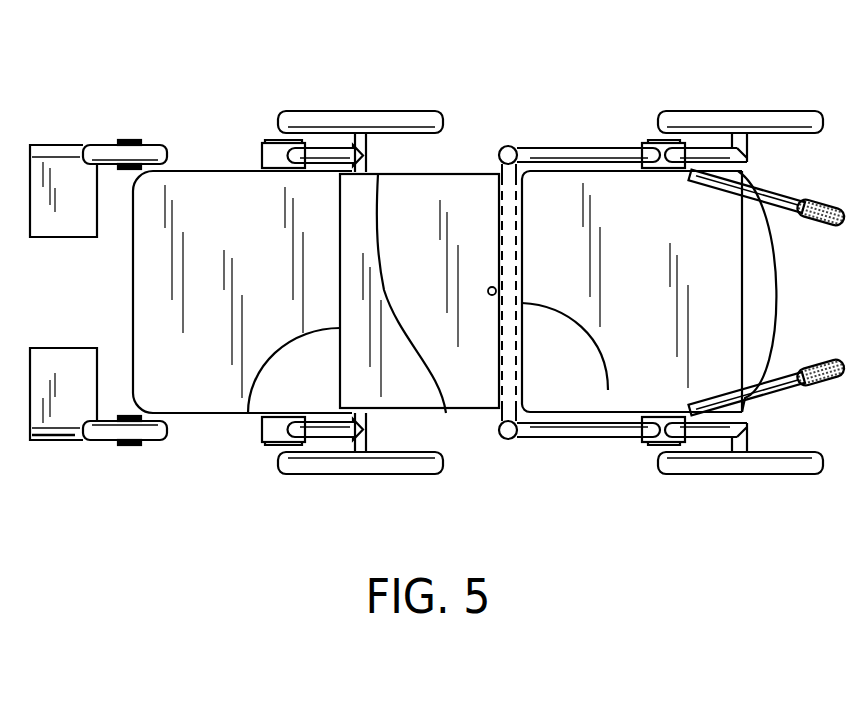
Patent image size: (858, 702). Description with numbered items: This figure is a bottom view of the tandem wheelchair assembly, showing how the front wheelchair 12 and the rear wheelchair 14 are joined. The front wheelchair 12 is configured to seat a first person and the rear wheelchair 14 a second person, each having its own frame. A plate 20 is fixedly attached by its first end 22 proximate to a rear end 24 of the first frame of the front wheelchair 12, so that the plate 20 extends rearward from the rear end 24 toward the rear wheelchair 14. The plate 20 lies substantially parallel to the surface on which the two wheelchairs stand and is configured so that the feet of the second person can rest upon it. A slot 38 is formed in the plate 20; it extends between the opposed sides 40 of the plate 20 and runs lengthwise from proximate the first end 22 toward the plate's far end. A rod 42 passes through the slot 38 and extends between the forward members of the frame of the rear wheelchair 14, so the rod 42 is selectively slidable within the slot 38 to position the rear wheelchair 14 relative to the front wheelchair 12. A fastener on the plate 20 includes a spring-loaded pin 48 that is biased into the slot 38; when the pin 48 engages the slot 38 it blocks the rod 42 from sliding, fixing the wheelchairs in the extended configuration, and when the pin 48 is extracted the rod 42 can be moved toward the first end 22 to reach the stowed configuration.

The front wheelchair 12 is at (228, 200).
The rear wheelchair 14 is at (620, 232).
The plate 20 is at (415, 205).
The first end 22 is at (248, 413).
The rear end 24 is at (608, 390).
The slot 38 is at (501, 348).
The opposed sides 40 is at (446, 413).
The rod 42 is at (508, 370).
The pin 48 is at (490, 288).